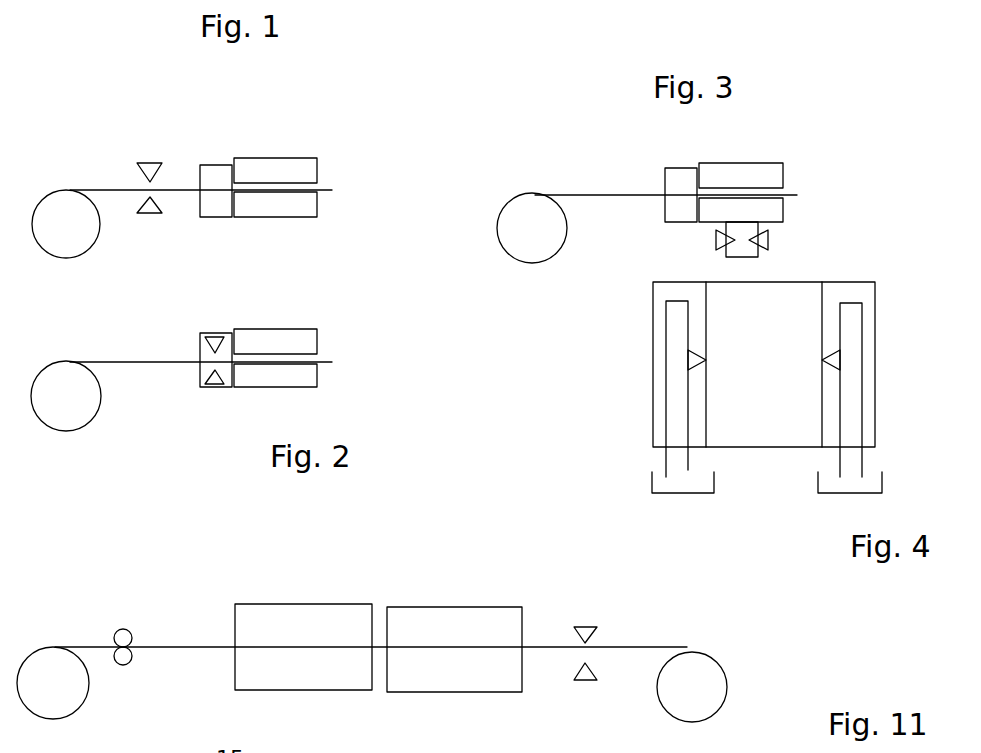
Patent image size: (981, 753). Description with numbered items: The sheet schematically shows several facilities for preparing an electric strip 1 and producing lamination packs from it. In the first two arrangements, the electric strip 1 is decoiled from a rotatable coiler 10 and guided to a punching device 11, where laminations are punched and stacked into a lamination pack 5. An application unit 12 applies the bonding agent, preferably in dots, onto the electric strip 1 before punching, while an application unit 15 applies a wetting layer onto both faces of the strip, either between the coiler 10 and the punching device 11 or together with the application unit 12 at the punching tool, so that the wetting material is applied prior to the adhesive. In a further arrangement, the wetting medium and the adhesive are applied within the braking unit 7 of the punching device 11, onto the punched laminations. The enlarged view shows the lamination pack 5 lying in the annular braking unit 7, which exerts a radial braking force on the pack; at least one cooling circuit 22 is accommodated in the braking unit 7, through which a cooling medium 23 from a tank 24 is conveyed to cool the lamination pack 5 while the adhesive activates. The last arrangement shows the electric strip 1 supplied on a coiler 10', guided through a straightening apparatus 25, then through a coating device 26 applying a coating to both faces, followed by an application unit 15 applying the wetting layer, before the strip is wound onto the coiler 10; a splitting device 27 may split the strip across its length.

In FIG. 1, the electric strip 1 is at (92, 188).
In FIG. 2, the electric strip 1 is at (112, 362).
In FIG. 3, the electric strip 1 is at (580, 193).
In FIG. 11, the electric strip 1 is at (143, 645).
In FIG. 1, the coiler 10 is at (70, 241).
In FIG. 2, the coiler 10 is at (74, 419).
In FIG. 3, the coiler 10 is at (525, 251).
In FIG. 11, the coiler 10 is at (714, 695).
In FIG. 11, the coiler 10' is at (64, 700).
In FIG. 1, the punching device 11 is at (293, 148).
In FIG. 1, the application unit 12 is at (210, 173).
In FIG. 2, the application unit 12 is at (201, 367).
In FIG. 3, the application unit 12 is at (672, 212).
In FIG. 1, the application unit 15 is at (147, 157).
In FIG. 2, the application unit 15 is at (217, 335).
In FIG. 3, the application unit 15 is at (715, 240).
In FIG. 11, the application unit 15 is at (587, 618).
In FIG. 4, the lamination pack 5 is at (760, 437).
In FIG. 4, the braking unit 7 is at (887, 355).
In FIG. 4, the cooling circuit 22 is at (668, 408).
In FIG. 4, the cooling medium 23 is at (698, 482).
In FIG. 4, the tank 24 is at (648, 478).
In FIG. 11, the straightening apparatus 25 is at (118, 629).
In FIG. 11, the coating device 26 is at (370, 592).
In FIG. 11, the splitting device 27 is at (454, 680).